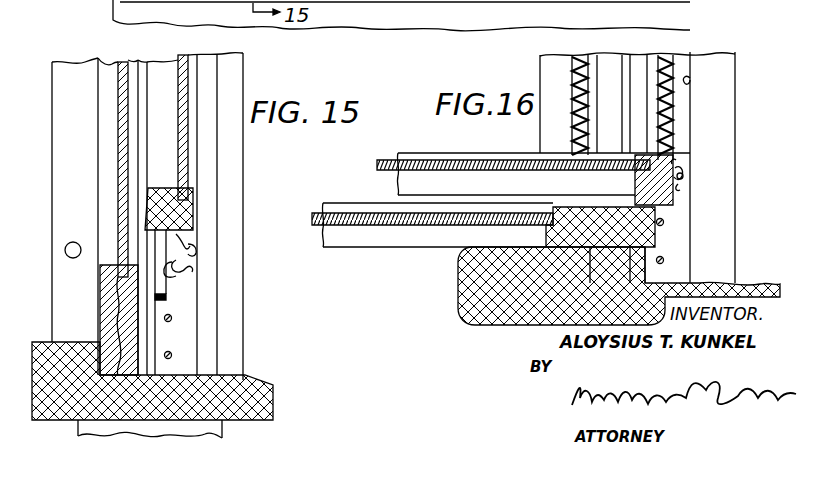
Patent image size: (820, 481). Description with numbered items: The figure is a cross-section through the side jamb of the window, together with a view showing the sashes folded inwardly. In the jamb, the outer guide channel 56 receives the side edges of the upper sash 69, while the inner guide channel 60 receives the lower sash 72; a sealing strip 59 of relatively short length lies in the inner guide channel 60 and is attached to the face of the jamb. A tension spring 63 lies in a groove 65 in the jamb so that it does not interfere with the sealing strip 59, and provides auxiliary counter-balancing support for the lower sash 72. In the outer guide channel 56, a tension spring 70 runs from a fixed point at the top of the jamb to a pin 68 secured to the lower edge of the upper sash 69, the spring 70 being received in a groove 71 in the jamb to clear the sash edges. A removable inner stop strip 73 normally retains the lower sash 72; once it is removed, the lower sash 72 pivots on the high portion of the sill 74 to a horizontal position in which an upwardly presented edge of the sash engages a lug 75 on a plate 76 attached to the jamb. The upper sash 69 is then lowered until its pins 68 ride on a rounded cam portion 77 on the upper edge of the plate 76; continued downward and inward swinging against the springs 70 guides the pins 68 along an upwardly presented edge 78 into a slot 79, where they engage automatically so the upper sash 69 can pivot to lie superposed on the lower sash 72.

In FIG. 15, the outer guide channel 56 is at (198, 240).
In FIG. 16, the outer guide channel 56 is at (698, 72).
In FIG. 16, the sealing strip 59 is at (614, 62).
In FIG. 15, the inner guide channel 60 is at (110, 70).
In FIG. 16, the tension spring 63 is at (540, 110).
In FIG. 16, the groove 65 is at (541, 62).
In FIG. 15, the pin 68 is at (197, 256).
In FIG. 16, the pin 68 is at (690, 170).
In FIG. 15, the upper sash 69 is at (196, 202).
In FIG. 16, the upper sash 69 is at (430, 153).
In FIG. 16, the tension spring 70 is at (672, 60).
In FIG. 16, the groove 71 is at (691, 62).
In FIG. 15, the lower sash 72 is at (105, 303).
In FIG. 16, the lower sash 72 is at (373, 240).
In FIG. 15, the inner stop strip 73 is at (62, 118).
In FIG. 15, the sill 74 is at (116, 394).
In FIG. 16, the sill 74 is at (485, 250).
In FIG. 15, the lug 75 is at (166, 292).
In FIG. 16, the lug 75 is at (668, 207).
In FIG. 15, the plate 76 is at (192, 347).
In FIG. 16, the plate 76 is at (690, 250).
In FIG. 15, the rounded cam portion 77 is at (190, 274).
In FIG. 16, the rounded cam portion 77 is at (680, 182).
In FIG. 15, the upwardly presented edge 78 is at (172, 250).
In FIG. 16, the upwardly presented edge 78 is at (672, 165).
In FIG. 15, the slot 79 is at (190, 267).
In FIG. 16, the slot 79 is at (686, 168).